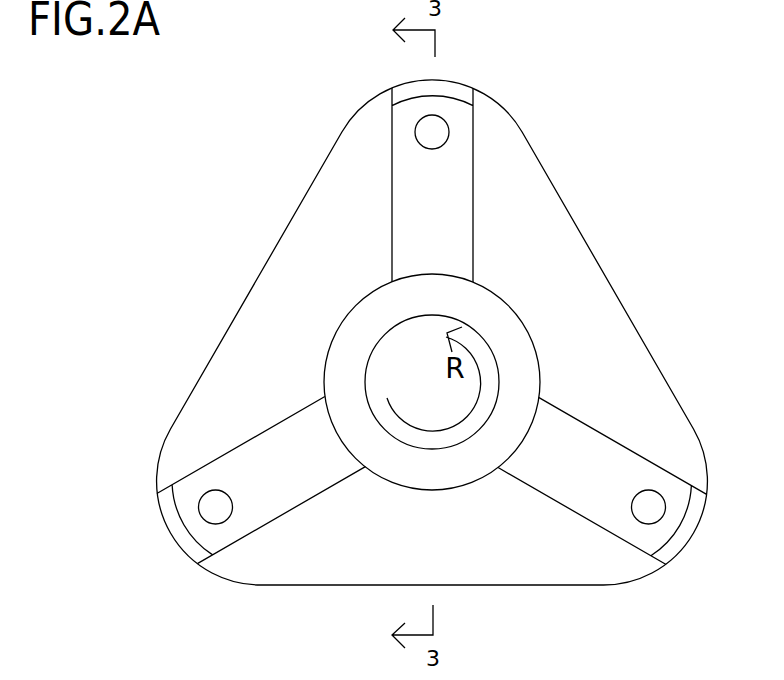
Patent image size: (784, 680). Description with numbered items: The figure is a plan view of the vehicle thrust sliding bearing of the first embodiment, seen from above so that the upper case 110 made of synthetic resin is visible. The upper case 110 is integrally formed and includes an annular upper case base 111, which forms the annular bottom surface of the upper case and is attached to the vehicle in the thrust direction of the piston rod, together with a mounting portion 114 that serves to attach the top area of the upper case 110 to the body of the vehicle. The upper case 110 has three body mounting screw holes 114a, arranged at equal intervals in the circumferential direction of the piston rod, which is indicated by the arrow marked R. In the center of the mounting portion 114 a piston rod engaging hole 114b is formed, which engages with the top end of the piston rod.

The upper case 110 is at (300, 202).
The upper case base 111 is at (513, 345).
The mounting portion 114 is at (538, 206).
The body mounting screw holes 114a is at (449, 134).
The piston rod engaging hole 114b is at (490, 405).